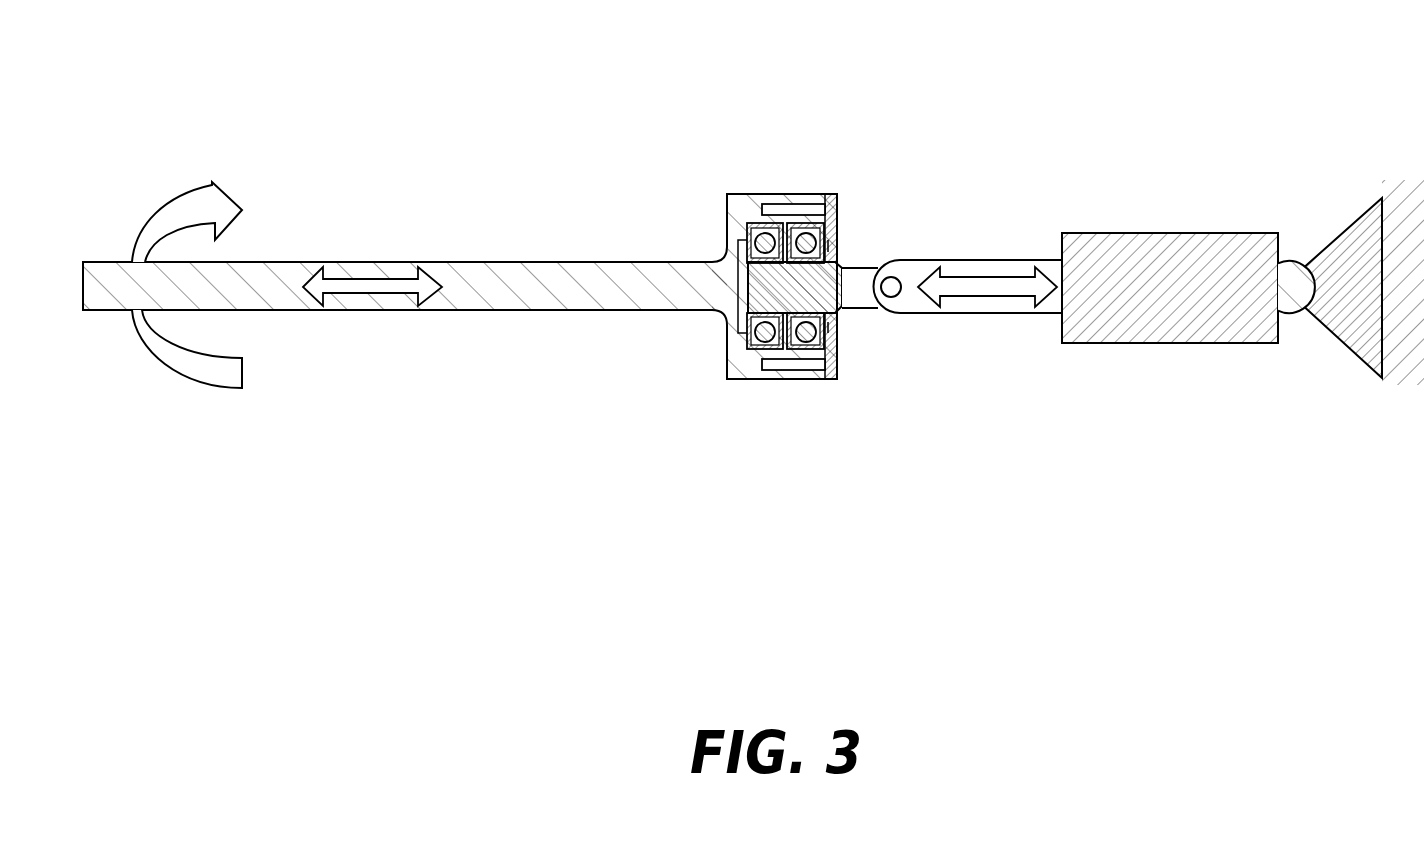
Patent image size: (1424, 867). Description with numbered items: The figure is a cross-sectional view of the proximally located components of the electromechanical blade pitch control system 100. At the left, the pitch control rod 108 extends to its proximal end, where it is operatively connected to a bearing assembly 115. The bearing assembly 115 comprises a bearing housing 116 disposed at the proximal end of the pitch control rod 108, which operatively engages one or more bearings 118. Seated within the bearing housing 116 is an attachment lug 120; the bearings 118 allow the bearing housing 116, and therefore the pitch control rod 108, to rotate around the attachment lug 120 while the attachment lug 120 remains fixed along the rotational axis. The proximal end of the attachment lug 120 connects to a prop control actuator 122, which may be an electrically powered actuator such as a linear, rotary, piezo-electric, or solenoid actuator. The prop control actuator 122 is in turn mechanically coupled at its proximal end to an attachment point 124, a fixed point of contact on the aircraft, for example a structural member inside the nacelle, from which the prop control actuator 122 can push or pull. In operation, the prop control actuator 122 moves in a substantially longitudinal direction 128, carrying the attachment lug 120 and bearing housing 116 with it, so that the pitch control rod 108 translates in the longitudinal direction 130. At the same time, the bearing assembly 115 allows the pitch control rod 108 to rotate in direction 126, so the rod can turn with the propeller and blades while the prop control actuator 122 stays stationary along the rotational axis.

The electromechanical blade pitch control system 100 is at (798, 71).
The pitch control rod 108 is at (557, 287).
The bearing assembly 115 is at (876, 248).
The bearing housing 116 is at (778, 205).
The bearings 118 is at (764, 334).
The attachment lug 120 is at (813, 288).
The prop control actuator 122 is at (1098, 233).
The attachment point 124 is at (1347, 232).
The direction of rotation 126 is at (213, 182).
The longitudinal direction of actuator movement 128 is at (989, 296).
The longitudinal direction of rod translation 130 is at (370, 278).